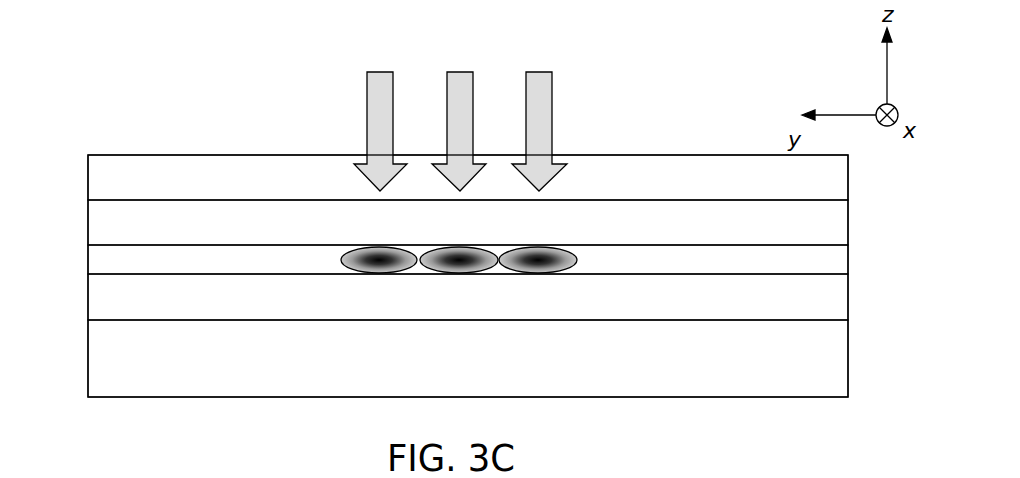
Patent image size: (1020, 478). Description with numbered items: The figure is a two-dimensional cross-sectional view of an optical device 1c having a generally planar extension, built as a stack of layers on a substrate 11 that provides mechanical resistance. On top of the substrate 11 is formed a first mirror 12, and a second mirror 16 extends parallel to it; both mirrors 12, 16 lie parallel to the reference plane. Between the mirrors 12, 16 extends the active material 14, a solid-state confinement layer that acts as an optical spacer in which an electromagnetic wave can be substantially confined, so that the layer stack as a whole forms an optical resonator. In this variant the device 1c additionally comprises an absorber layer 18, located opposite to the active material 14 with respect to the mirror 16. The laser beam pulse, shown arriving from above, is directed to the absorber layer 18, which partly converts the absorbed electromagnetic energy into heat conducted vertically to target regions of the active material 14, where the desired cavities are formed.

The substrate 11 is at (103, 358).
The mirror 12 is at (103, 290).
The active material 14 is at (90, 254).
The mirror 16 is at (105, 211).
The absorber layer 18 is at (100, 164).
The optical device 1c is at (841, 411).